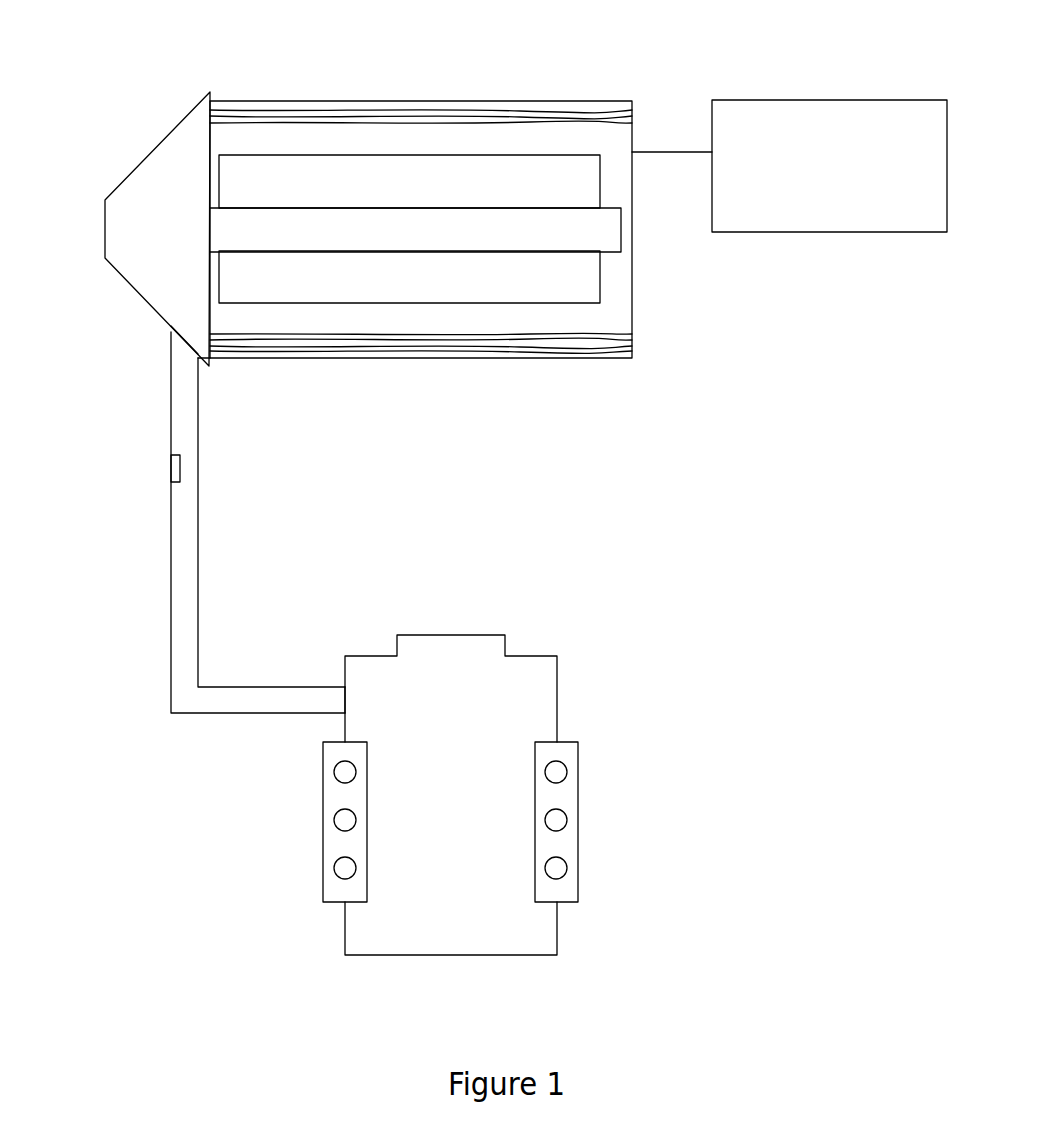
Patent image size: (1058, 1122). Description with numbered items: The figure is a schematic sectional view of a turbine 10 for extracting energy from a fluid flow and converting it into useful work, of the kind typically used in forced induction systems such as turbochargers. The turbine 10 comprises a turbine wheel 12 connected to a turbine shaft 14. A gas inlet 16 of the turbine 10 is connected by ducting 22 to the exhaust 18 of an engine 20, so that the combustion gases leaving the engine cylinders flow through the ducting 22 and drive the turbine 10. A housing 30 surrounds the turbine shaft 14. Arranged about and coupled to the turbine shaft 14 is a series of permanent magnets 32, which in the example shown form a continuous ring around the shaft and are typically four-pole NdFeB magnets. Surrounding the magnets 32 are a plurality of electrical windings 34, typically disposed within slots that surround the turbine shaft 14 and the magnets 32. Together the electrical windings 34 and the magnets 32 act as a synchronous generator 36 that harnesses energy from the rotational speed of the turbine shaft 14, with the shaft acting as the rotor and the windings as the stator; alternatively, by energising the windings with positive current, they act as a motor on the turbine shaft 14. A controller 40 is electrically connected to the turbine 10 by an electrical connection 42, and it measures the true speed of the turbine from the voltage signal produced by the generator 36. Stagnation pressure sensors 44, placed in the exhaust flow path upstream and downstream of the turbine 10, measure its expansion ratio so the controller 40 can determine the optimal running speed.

The turbine 10 is at (398, 101).
The turbine wheel 12 is at (188, 170).
The turbine shaft 14 is at (588, 235).
The gas inlet 16 is at (187, 343).
The exhaust 18 is at (345, 690).
The engine 20 is at (535, 705).
The ducting 22 is at (187, 510).
The housing 30 is at (580, 102).
The permanent magnets 32 is at (410, 197).
The electrical windings 34 is at (316, 118).
The synchronous generator 36 is at (580, 320).
The controller 40 is at (822, 122).
The electrical connection 42 is at (665, 152).
The stagnation pressure sensors 44 is at (172, 472).